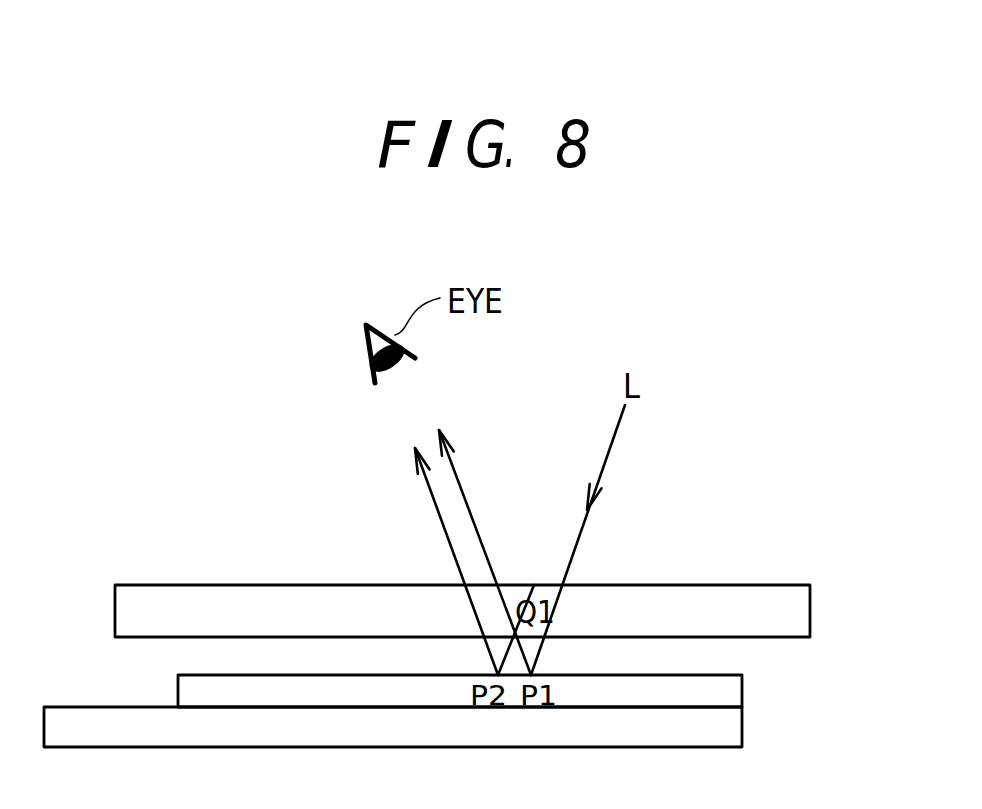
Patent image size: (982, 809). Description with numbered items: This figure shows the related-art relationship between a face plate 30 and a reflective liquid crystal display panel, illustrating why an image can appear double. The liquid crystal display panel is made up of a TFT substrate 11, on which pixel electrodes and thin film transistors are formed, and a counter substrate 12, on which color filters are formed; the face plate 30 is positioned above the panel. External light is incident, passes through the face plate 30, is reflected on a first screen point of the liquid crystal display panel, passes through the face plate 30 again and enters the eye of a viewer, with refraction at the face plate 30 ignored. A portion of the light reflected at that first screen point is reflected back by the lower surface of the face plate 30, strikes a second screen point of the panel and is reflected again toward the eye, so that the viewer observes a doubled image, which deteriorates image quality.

The face plate 30 is at (786, 585).
The TFT substrate 11 is at (743, 690).
The counter substrate 12 is at (743, 730).